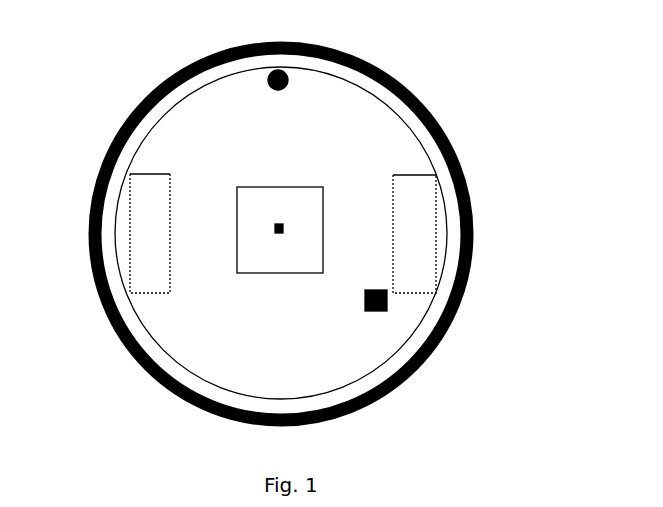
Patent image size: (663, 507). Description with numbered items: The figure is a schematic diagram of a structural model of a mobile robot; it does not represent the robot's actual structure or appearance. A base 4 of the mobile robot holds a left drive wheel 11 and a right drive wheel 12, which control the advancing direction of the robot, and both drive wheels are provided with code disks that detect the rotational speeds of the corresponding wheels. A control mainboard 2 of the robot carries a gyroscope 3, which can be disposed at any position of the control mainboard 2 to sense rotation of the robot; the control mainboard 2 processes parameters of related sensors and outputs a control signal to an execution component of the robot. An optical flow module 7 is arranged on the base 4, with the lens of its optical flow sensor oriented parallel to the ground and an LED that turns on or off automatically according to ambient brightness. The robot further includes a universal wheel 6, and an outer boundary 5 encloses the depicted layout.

The control mainboard 2 is at (310, 205).
The gyroscope 3 is at (275, 226).
The base 4 is at (167, 333).
The outer ring 5 is at (457, 147).
The universal wheel 6 is at (285, 72).
The optical flow module 7 is at (386, 310).
The left drive wheel 11 is at (148, 232).
The right drive wheel 12 is at (413, 233).